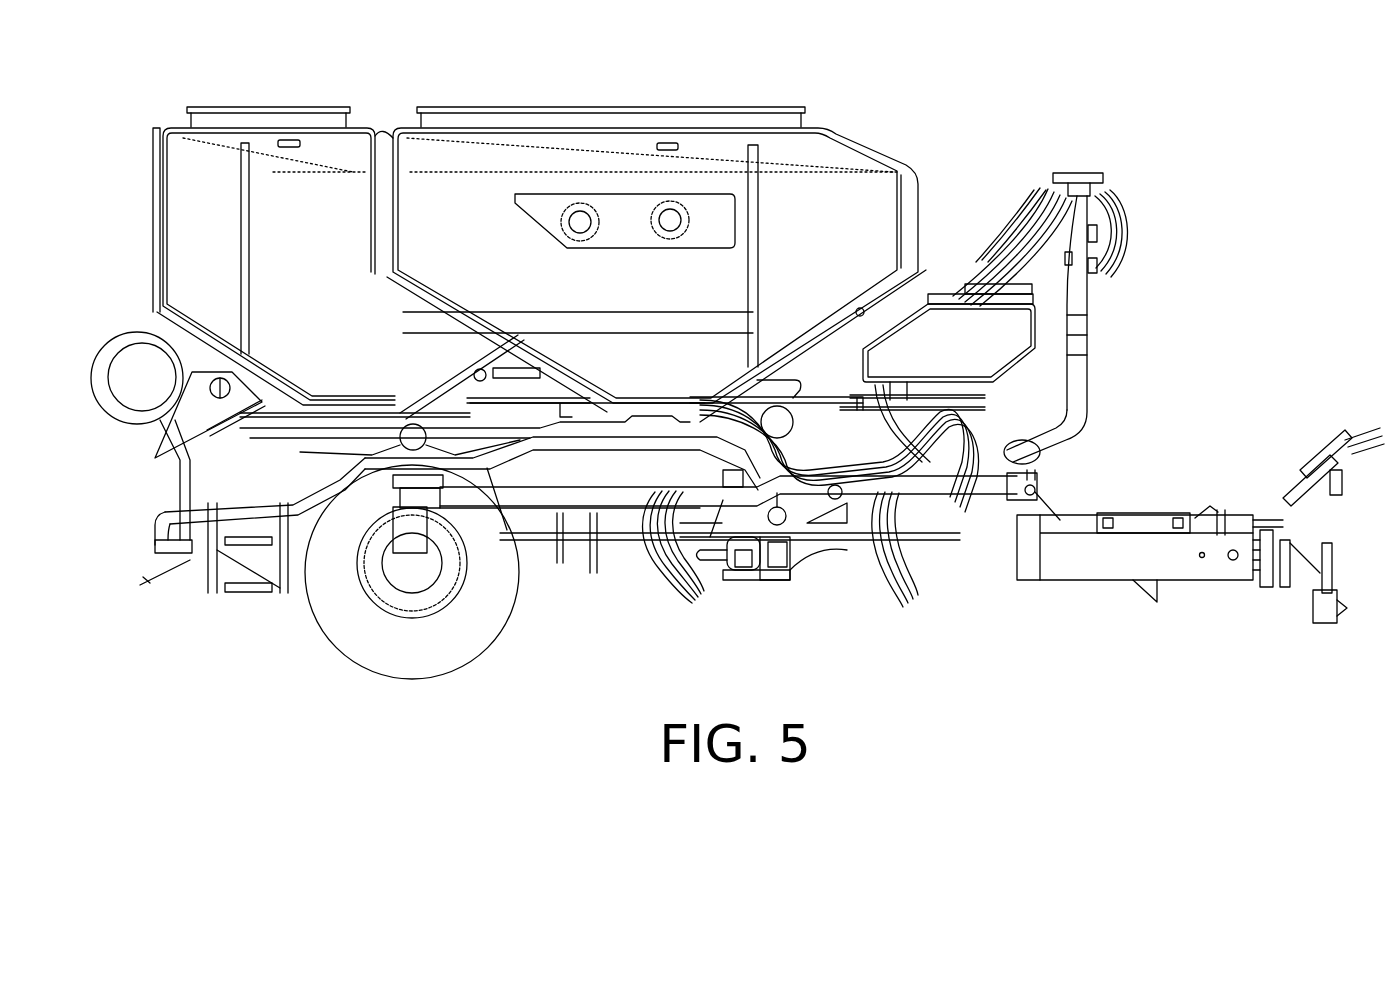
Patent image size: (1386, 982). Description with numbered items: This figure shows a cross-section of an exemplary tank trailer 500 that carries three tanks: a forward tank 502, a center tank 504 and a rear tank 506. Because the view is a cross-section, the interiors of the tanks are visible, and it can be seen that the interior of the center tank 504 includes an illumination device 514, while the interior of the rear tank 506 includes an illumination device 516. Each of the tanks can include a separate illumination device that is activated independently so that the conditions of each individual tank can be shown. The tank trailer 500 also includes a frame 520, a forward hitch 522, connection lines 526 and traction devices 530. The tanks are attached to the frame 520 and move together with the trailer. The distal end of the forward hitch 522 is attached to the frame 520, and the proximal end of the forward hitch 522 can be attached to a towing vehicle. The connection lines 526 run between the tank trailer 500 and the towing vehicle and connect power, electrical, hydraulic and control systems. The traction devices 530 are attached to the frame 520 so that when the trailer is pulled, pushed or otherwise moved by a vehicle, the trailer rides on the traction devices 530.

The tank trailer 500 is at (1040, 122).
The forward tank 502 is at (940, 338).
The center tank 504 is at (637, 372).
The rear tank 506 is at (312, 344).
The illumination device 514 is at (665, 151).
The illumination device 516 is at (291, 148).
The frame 520 is at (625, 593).
The forward hitch 522 is at (1163, 567).
The connection lines 526 is at (1247, 518).
The traction devices 530 is at (352, 640).